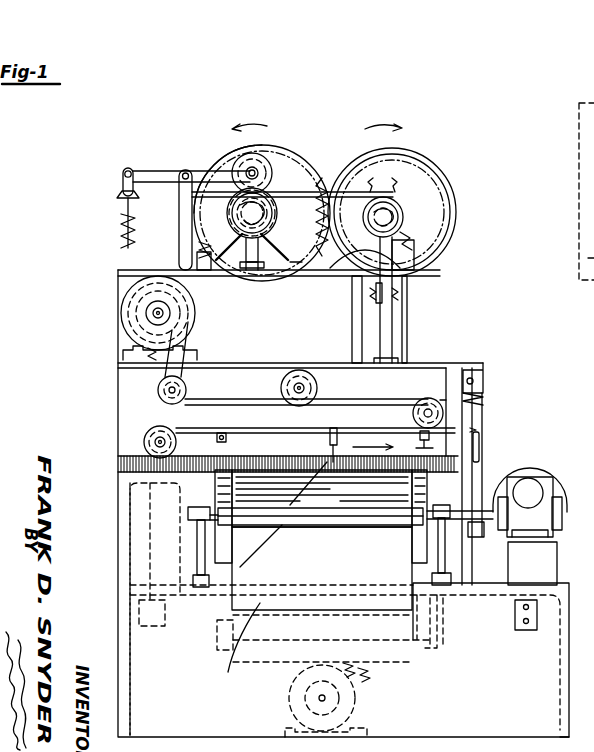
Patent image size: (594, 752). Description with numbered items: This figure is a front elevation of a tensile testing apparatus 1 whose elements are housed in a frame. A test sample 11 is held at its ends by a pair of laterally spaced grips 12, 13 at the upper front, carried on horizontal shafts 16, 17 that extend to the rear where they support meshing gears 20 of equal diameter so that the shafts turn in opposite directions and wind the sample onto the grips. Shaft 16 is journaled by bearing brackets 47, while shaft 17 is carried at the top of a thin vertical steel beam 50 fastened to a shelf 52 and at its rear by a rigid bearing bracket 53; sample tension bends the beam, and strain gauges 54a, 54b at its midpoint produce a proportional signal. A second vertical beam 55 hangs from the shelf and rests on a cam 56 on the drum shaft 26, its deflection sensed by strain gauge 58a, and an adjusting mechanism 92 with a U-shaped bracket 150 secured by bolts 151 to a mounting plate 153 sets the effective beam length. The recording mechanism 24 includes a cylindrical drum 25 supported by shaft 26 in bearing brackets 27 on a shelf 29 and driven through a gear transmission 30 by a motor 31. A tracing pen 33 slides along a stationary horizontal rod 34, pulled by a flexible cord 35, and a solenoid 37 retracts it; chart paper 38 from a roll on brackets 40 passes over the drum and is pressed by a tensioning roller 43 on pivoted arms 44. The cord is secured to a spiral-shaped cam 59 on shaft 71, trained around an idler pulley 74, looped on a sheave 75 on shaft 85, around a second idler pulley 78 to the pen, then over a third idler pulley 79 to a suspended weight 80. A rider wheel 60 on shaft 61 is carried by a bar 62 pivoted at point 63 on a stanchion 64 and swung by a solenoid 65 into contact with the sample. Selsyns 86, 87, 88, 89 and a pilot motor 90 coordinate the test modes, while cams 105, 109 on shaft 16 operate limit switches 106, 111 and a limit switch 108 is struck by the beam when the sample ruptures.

The machine 1 is at (548, 700).
The test sample 11 is at (313, 218).
The grip 12 is at (272, 228).
The grip 13 is at (362, 222).
The shaft 16 is at (241, 202).
The shaft 17 is at (386, 212).
The meshing gears 20 is at (450, 252).
The recording mechanism 24 is at (205, 625).
The cylindrical drum 25 is at (410, 500).
The shaft 26 is at (412, 530).
The bearing brackets 27 is at (197, 556).
The shelf 29 is at (502, 587).
The gear transmission 30 is at (548, 530).
The motor 31 is at (549, 470).
The tracing pen 33 is at (328, 455).
The stationary horizontal rod 34 is at (267, 433).
The flexible cord 35 is at (323, 428).
The solenoid 37 is at (353, 440).
The roll of chart paper 38 is at (250, 661).
The brackets 40 is at (205, 635).
The tensioning roller 43 is at (285, 524).
The arms 44 is at (195, 521).
The bearing brackets 47 is at (253, 267).
The vertical steel beam 50 is at (378, 349).
The shelf 52 is at (238, 364).
The rigid bearing bracket 53 is at (357, 263).
The electric strain gauge 54a is at (393, 293).
The electric strain gauge 54b is at (375, 292).
The second vertical beam 55 is at (458, 400).
The cam 56 is at (473, 537).
The electric strain gauge 58a is at (481, 447).
The spiral-shaped cam 59 is at (125, 320).
The rider wheel 60 is at (277, 153).
The horizontal shaft 61 is at (256, 176).
The bar 62 is at (153, 177).
The pivot point 63 is at (183, 169).
The stanchion 64 is at (178, 192).
The solenoid 65 is at (116, 212).
The horizontal shaft 71 is at (151, 313).
The idler pulley 74 is at (162, 399).
The sheave 75 is at (293, 389).
The second idler pulley 78 is at (418, 406).
The third idler pulley 79 is at (143, 444).
The weight 80 is at (139, 612).
The shaft 85 is at (312, 385).
The Selsyn 86 is at (286, 381).
The Selsyn 87 is at (128, 300).
The Selsyn 88 is at (270, 160).
The Selsyn 89 is at (340, 699).
The pilot motor 90 is at (355, 700).
The adjusting mechanism 92 is at (498, 382).
The cam 105 is at (227, 224).
The limit switch 106 is at (197, 258).
The limit switch 108 is at (413, 257).
The cam 109 is at (229, 216).
The limit switch 111 is at (296, 278).
The U-shaped bracket 150 is at (482, 394).
The bolts 151 is at (486, 385).
The mounting plate 153 is at (475, 422).